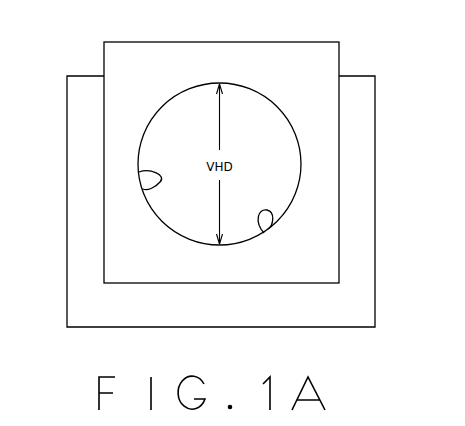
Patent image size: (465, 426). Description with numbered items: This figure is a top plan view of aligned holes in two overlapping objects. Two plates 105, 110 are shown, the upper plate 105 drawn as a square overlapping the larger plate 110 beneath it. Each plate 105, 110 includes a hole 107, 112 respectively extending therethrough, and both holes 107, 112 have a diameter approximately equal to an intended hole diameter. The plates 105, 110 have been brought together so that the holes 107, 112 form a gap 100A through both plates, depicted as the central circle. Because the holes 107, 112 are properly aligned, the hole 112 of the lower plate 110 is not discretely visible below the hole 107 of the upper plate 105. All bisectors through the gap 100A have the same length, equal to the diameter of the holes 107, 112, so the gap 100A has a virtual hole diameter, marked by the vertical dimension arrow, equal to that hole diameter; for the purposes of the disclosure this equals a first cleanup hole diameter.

The gap 100A is at (277, 176).
The plate 105 is at (302, 42).
The hole 107 is at (143, 189).
The plate 110 is at (375, 108).
The hole 112 is at (264, 233).